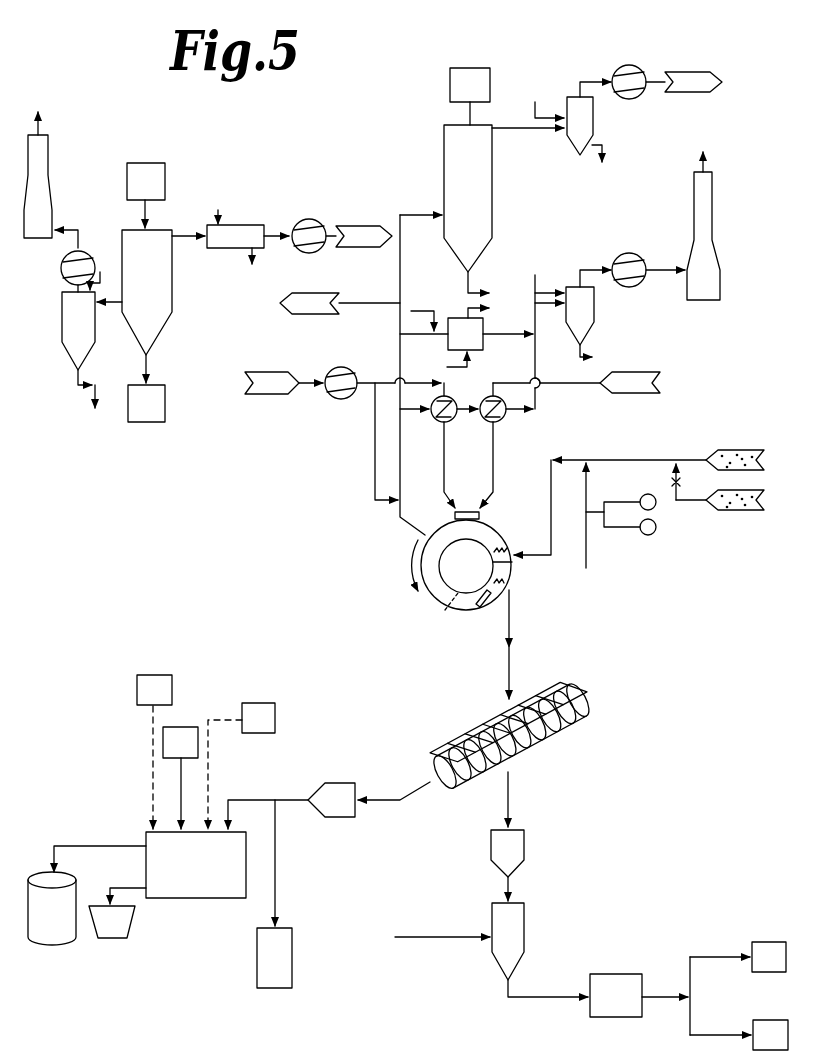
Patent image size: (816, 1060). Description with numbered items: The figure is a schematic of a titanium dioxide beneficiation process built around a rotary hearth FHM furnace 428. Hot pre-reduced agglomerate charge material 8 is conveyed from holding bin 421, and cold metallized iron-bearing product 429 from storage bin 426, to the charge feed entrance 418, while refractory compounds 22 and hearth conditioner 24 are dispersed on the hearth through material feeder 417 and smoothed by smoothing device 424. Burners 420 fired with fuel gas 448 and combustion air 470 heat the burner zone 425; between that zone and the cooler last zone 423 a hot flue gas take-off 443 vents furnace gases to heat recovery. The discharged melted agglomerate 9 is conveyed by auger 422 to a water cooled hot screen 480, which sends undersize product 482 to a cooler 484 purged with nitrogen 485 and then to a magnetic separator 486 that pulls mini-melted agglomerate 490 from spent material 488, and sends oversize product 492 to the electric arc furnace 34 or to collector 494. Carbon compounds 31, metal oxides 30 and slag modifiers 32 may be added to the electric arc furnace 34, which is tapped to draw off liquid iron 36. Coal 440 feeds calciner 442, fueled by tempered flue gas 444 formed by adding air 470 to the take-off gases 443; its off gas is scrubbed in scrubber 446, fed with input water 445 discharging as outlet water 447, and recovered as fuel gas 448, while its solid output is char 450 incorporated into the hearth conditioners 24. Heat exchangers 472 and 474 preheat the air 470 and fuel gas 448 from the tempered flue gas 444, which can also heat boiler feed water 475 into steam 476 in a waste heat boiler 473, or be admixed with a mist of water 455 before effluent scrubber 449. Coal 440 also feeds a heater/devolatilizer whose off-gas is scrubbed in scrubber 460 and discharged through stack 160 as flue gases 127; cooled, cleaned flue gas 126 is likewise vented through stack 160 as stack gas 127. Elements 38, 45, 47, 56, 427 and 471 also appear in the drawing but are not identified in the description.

The charge material 8 is at (750, 452).
The discharged melted agglomerate 9 is at (513, 626).
The refractory compounds 22 is at (656, 507).
The hearth conditioner 24 is at (652, 535).
The metal oxides 30 is at (192, 752).
The carbon compounds 31 is at (480, 606).
The slag modifiers 32 is at (278, 725).
The electric arc furnace 34 is at (208, 881).
The liquid iron 36 is at (123, 940).
The storage tank 38 is at (64, 926).
The inlet line 45 is at (100, 270).
The solids outlet 47 is at (603, 177).
The separator tank 56 is at (160, 301).
The cooled/cleaned flue gas 126 is at (74, 228).
The stack gas 127 is at (44, 116).
The stack 160 is at (50, 166).
The material feeder 417 is at (514, 573).
The charge feed entrance 418 is at (512, 556).
The burners 420 is at (461, 510).
The holding bin 421 is at (716, 450).
The product discharge device 422 is at (500, 590).
The last zone 423 is at (463, 605).
The smoothing device 424 is at (514, 564).
The burner zone 425 is at (450, 532).
The storage bin 426 is at (741, 512).
The valve 427 is at (672, 480).
The FHM furnace 428 is at (417, 618).
The metallized iron-bearing product 429 is at (757, 512).
The coal 440 is at (159, 191).
The calciner 442 is at (486, 205).
The hot flue gas take-off 443 is at (410, 527).
The tempered flue gas 444 is at (305, 314).
The input water 445 is at (387, 243).
The scrubber 446 is at (594, 115).
The outlet water 447 is at (617, 346).
The fuel gas 448 is at (358, 225).
The effluent scrubber 449 is at (595, 305).
The char 450 is at (160, 413).
The mist of water 455 is at (434, 311).
The scrubber 460 is at (90, 337).
The combustion air 470 is at (262, 395).
The air line 471 is at (372, 457).
The heat exchanger 472 is at (453, 398).
The waste heat boiler 473 is at (459, 326).
The heat exchanger 474 is at (503, 420).
The boiler feed water 475 is at (437, 366).
The steam 476 is at (498, 312).
The water cooled hot screen 480 is at (578, 727).
The undersize product 482 is at (526, 852).
The cooler 484 is at (526, 942).
The nitrogen 485 is at (433, 938).
The magnetic separator 486 is at (634, 1006).
The spent material 488 is at (781, 966).
The mini-melted agglomerate 490 is at (782, 1044).
The oversize product 492 is at (348, 818).
The collector 494 is at (288, 967).